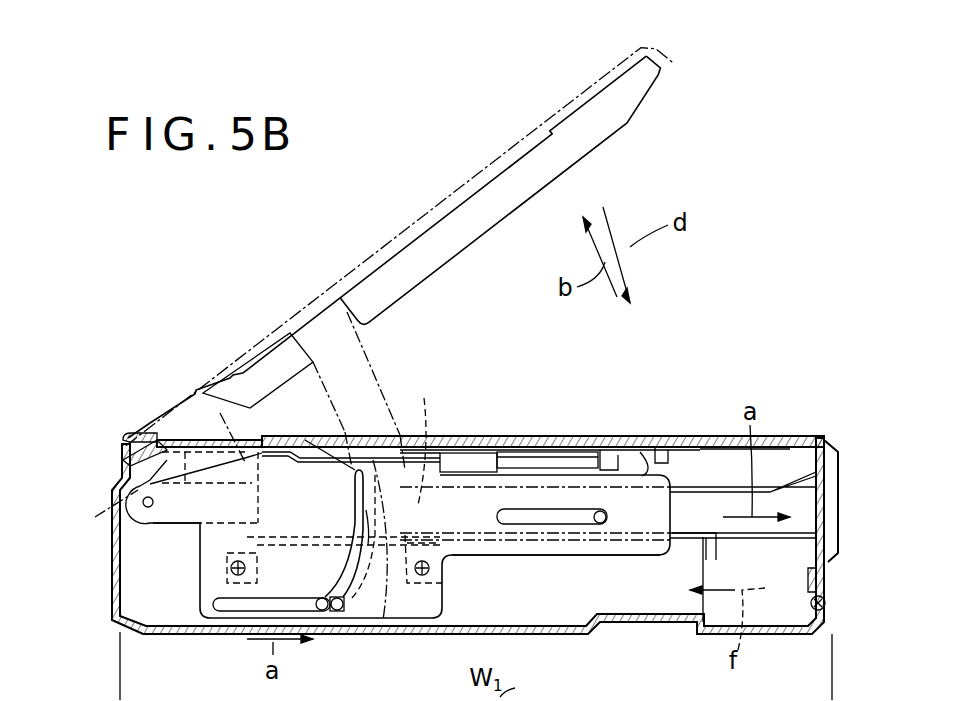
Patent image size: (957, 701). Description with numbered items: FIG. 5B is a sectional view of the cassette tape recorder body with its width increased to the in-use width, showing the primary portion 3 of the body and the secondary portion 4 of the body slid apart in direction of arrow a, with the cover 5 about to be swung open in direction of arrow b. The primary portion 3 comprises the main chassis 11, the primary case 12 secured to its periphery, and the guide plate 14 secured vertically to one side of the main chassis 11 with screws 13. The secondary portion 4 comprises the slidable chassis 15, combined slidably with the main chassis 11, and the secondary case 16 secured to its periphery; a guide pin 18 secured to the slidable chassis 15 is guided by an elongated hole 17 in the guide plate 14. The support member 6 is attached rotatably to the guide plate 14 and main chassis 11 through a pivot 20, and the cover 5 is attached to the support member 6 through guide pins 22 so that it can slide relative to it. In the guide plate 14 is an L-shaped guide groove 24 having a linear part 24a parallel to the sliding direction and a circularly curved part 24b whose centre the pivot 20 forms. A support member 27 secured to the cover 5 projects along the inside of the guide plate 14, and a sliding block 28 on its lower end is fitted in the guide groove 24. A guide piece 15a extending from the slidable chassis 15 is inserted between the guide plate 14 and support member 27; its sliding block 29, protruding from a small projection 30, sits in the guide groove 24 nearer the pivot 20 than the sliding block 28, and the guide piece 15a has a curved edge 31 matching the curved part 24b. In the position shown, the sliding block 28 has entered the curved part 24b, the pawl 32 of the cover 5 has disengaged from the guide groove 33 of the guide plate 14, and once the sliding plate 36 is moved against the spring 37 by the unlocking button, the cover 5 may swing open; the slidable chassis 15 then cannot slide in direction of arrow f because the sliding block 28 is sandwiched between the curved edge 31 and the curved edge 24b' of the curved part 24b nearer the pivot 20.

The primary portion of the body 3 is at (566, 641).
The secondary portion of the body 4 is at (852, 530).
The cover 5 is at (555, 107).
The support member 6 is at (190, 447).
The main chassis 11 is at (667, 565).
The primary case 12 is at (436, 634).
The screws 13 is at (232, 573).
The guide plate 14 is at (560, 556).
The slidable chassis 15 is at (797, 500).
The guide piece 15a is at (405, 535).
The secondary case 16 is at (830, 582).
The elongated hole 17 is at (575, 520).
The guide pin 18 is at (607, 517).
The pivot 20 is at (142, 505).
The guide pins 22 is at (462, 467).
The L-shaped guide groove 24 is at (348, 513).
The linear part of the guide groove 24a is at (228, 605).
The curved part of the guide groove 24b is at (372, 567).
The curved edge of the curved part 24b' is at (318, 526).
The support member 27 is at (380, 392).
The sliding block 28 is at (357, 472).
The sliding block 29 is at (321, 612).
The small projection 30 is at (330, 597).
The curved edge 31 is at (325, 440).
The pawl 32 is at (617, 463).
The guide groove 33 is at (531, 455).
The sliding plate 36 is at (814, 568).
The spring 37 is at (827, 607).